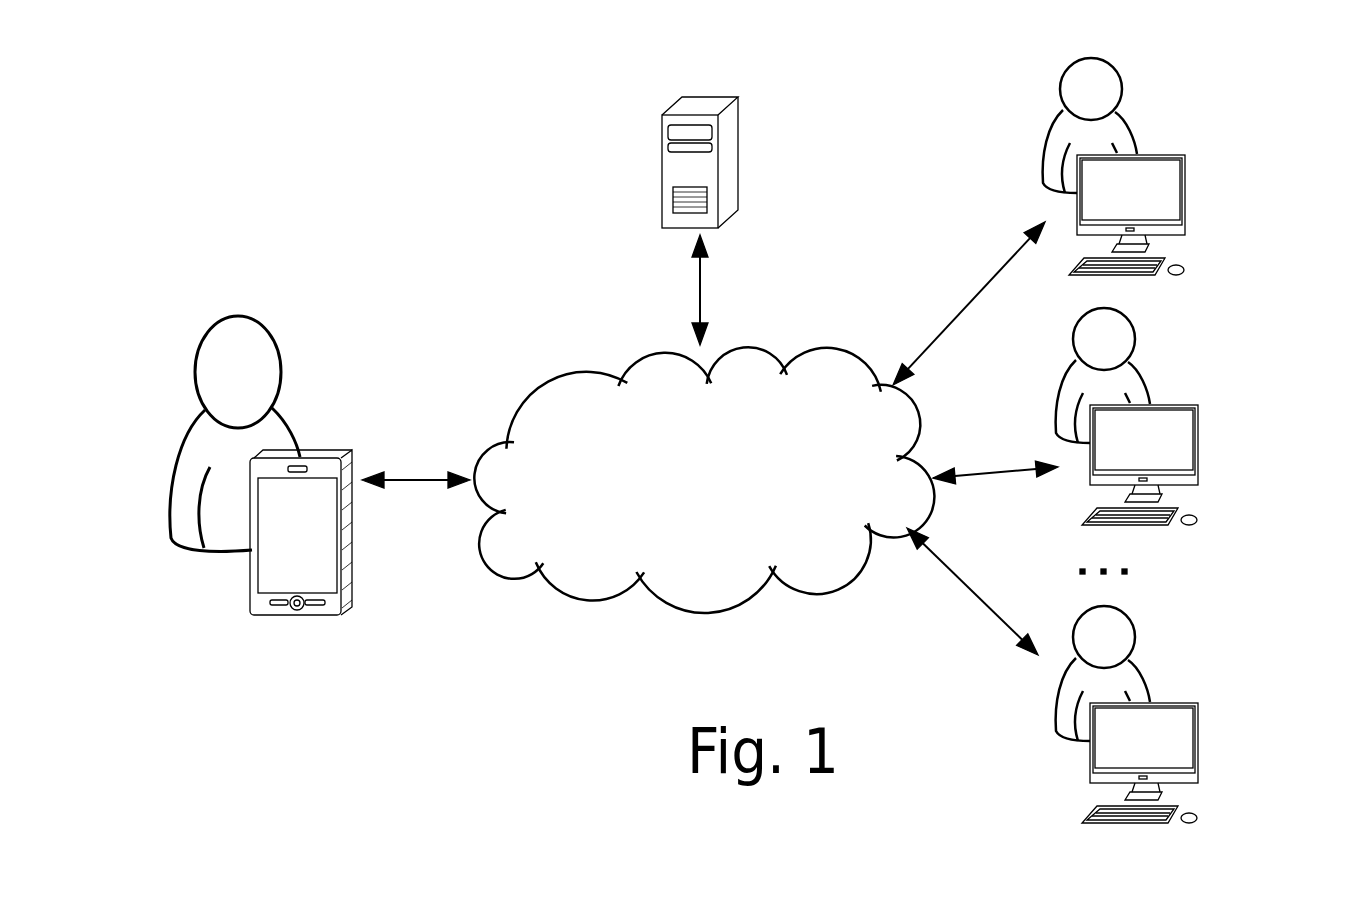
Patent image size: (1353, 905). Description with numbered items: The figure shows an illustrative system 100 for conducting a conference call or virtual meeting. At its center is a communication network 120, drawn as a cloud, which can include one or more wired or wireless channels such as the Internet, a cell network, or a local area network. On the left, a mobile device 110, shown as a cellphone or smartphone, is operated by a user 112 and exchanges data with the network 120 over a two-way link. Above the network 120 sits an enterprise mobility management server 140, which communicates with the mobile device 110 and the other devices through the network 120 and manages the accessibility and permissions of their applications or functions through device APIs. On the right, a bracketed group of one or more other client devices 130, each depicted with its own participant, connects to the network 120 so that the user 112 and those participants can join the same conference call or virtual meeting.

The system 100 is at (434, 172).
The mobile device 110 is at (311, 457).
The user 112 is at (226, 313).
The communication network 120 is at (567, 440).
The client devices 130 is at (1219, 27).
The enterprise mobility management server 140 is at (707, 93).